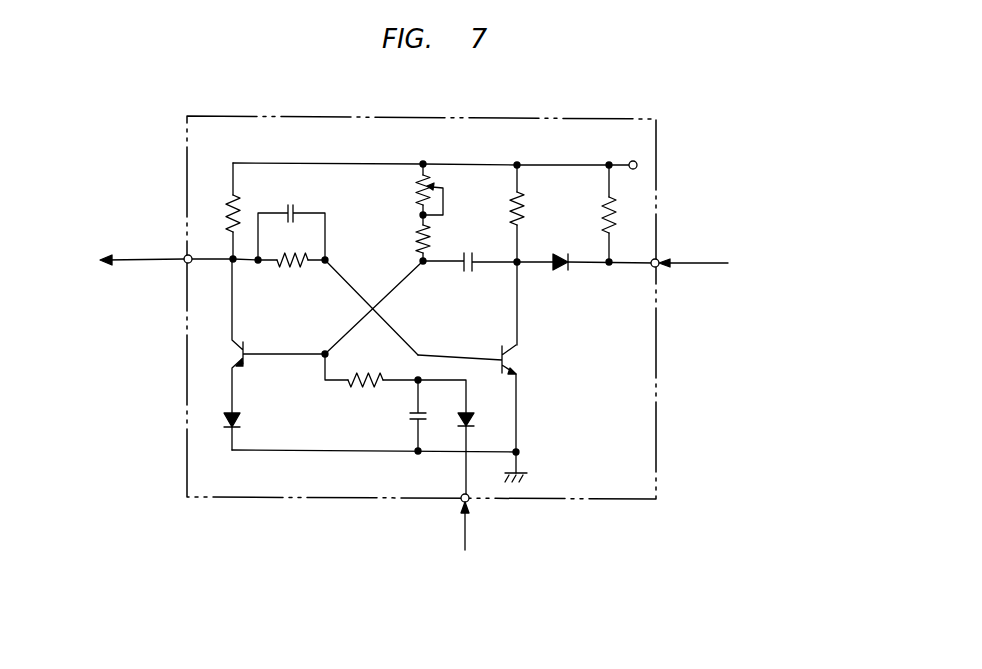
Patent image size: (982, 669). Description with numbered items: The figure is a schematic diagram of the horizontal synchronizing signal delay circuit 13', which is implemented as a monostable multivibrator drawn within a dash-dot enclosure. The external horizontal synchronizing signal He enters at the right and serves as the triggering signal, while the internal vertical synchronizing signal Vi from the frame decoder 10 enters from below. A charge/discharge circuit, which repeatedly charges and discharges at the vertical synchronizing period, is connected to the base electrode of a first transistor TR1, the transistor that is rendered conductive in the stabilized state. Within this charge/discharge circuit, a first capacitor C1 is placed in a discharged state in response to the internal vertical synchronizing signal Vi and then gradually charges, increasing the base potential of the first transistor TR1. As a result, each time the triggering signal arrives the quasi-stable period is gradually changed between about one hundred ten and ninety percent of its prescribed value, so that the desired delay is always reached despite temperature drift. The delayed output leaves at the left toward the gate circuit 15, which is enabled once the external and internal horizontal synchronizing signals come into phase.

The horizontal synchronizing signal delay circuit 13' is at (474, 342).
The gate circuit 15 is at (121, 238).
The frame decoder 10 is at (500, 568).
The first transistor TR1 is at (240, 361).
The first capacitor C1 is at (410, 417).